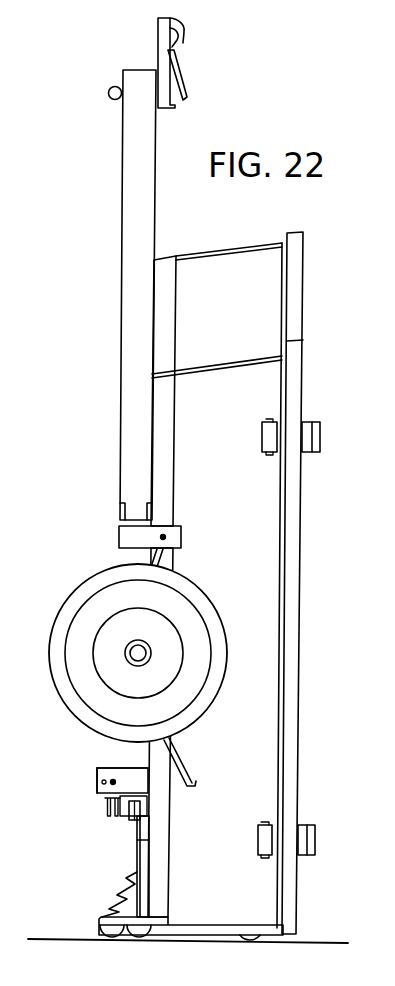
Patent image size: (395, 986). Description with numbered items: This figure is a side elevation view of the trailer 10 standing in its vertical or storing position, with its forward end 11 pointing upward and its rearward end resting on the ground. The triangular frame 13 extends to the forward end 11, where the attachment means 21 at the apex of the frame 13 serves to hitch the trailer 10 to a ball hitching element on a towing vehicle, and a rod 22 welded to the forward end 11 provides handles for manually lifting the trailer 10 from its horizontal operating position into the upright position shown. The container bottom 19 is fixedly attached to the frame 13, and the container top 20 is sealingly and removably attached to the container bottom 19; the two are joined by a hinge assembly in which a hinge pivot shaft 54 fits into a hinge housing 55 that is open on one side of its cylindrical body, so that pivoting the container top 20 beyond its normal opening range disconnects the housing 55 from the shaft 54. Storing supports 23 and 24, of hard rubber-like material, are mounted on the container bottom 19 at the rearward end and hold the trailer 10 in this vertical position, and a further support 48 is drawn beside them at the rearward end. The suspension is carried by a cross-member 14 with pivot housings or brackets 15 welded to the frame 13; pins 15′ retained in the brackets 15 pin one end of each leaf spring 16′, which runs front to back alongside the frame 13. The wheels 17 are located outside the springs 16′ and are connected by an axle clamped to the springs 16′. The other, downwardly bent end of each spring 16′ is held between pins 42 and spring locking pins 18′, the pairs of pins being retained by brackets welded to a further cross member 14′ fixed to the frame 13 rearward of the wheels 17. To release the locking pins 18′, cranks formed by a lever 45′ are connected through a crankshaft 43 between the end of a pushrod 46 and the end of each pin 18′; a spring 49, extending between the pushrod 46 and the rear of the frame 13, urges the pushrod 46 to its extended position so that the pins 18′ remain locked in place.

The trailer 10 is at (67, 387).
The forward end 11 is at (141, 67).
The triangular frame 13 is at (117, 326).
The cross-member 14 is at (116, 508).
The cross member 14′ is at (144, 806).
The pivot housings (brackets) 15 is at (115, 540).
The pins 15′ is at (161, 535).
The leaf springs 16′ is at (160, 564).
The wheels 17 is at (78, 577).
The spring locking pins 18′ is at (124, 768).
The container bottom 19 is at (241, 562).
The container top 20 is at (290, 658).
The attachment means 21 is at (179, 43).
The rod 22 is at (111, 99).
The storing support 23 is at (104, 938).
The storing support 24 is at (246, 940).
The pins 42 is at (100, 782).
The clamp 43 is at (124, 821).
The lever 45′ is at (124, 840).
The pushrod 46 is at (141, 847).
The roller 48 is at (132, 938).
The spring 49 is at (98, 903).
The hinge pivot shaft 54 is at (266, 454).
The hinge housing 55 is at (309, 420).